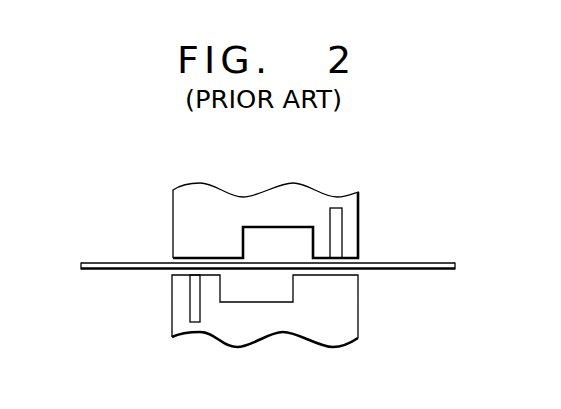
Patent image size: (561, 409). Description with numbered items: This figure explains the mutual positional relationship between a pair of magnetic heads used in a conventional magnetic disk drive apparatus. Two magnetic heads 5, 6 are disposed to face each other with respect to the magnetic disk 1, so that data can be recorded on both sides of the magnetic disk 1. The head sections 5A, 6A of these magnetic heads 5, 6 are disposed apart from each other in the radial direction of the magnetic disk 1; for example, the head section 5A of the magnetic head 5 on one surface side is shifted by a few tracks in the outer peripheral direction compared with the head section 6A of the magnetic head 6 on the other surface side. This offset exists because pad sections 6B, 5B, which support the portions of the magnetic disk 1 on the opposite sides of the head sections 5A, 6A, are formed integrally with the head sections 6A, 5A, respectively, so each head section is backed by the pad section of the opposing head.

The magnetic disk 1 is at (93, 272).
The magnetic head 5 is at (283, 334).
The head section 5A is at (192, 300).
The pad section 5B is at (325, 284).
The magnetic head 6 is at (280, 182).
The head section 6A is at (338, 227).
The pad section 6B is at (197, 252).